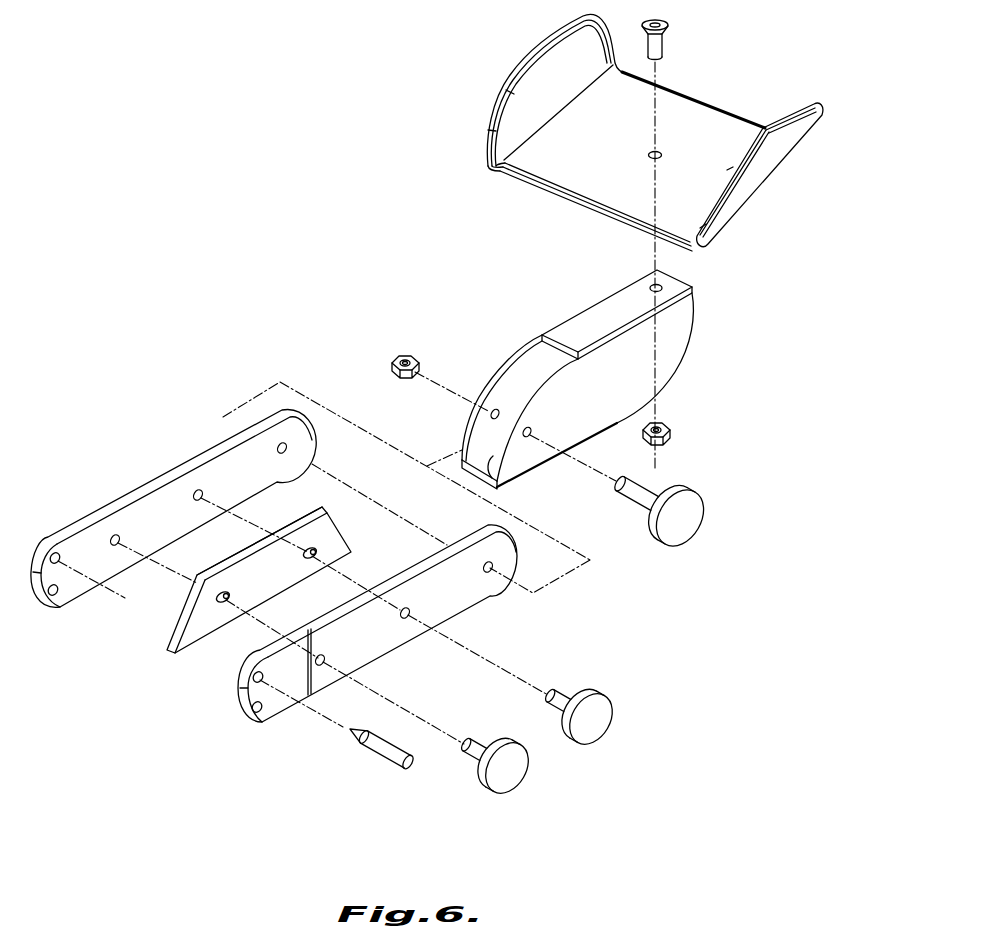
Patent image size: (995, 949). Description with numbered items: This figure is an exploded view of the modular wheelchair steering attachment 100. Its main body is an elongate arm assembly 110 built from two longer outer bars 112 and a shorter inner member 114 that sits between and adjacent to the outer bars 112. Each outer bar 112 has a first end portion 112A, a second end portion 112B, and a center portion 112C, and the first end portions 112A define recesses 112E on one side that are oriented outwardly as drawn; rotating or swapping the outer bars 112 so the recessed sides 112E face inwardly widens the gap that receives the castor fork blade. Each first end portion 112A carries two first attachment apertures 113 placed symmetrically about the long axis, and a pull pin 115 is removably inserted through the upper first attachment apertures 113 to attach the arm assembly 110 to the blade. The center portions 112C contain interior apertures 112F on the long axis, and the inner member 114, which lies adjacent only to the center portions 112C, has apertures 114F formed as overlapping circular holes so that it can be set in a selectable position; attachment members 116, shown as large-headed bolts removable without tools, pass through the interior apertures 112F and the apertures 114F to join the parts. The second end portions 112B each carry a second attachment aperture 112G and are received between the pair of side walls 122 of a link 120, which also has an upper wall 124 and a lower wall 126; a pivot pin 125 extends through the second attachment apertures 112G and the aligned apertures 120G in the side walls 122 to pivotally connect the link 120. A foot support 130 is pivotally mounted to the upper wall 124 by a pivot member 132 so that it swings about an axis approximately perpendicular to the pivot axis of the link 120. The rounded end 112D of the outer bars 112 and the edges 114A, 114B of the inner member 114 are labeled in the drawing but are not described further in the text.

The steering attachment 100 is at (210, 166).
The elongate arm assembly 110 is at (242, 398).
The outer bars 112 is at (190, 452).
The first end portion 112A is at (90, 520).
The second end portion 112B is at (265, 418).
The center portion 112C is at (167, 472).
The rounded end of side plate 112D is at (303, 413).
The recesses 112E is at (77, 522).
The interior apertures 112F is at (202, 497).
The second attachment aperture 112G is at (287, 447).
The first attachment apertures 113 is at (53, 553).
The inner member 114 is at (347, 528).
The front edge of cross plate 114A is at (185, 603).
The top edge of cross plate 114B is at (325, 507).
The apertures 114F is at (312, 553).
The pull pin 115 is at (405, 765).
The attachment members 116 is at (595, 725).
The link 120 is at (672, 388).
The aligned apertures 120G is at (492, 416).
The side walls 122 is at (500, 398).
The upper wall 124 is at (605, 307).
The pivot pin 125 is at (683, 515).
The lower wall 126 is at (492, 462).
The foot support 130 is at (722, 102).
The pivot member 132 is at (669, 23).